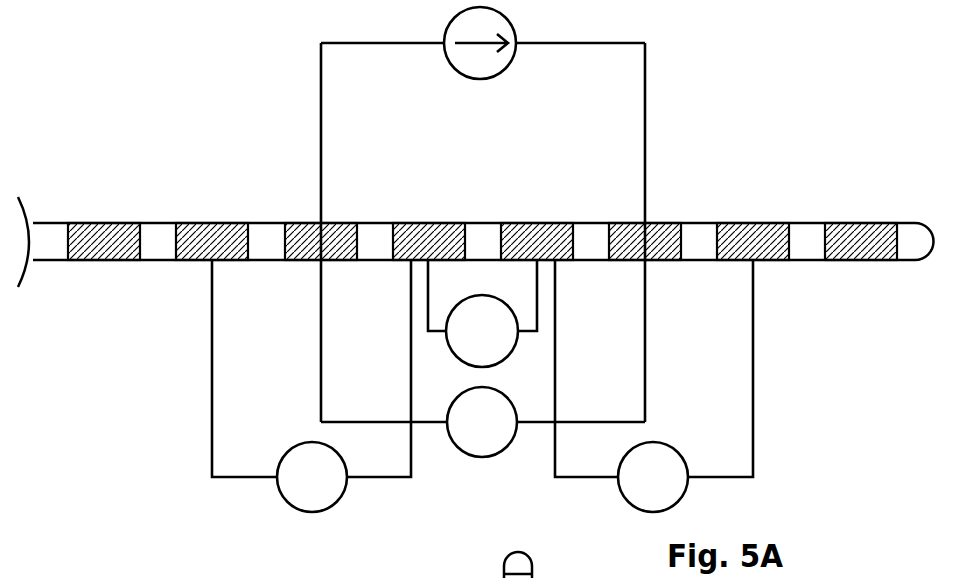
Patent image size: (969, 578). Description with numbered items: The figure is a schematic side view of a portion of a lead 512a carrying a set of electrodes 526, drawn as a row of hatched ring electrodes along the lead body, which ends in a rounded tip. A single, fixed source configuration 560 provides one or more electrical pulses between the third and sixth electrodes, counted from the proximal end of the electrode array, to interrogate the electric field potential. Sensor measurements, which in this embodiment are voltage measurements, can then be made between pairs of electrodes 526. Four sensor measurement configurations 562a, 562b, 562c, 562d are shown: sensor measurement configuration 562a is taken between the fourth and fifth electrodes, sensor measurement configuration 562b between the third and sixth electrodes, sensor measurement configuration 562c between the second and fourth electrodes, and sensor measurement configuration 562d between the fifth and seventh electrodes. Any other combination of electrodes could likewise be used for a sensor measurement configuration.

The lead 512a is at (812, 223).
The electrodes 526 is at (217, 223).
The source configuration 560 is at (468, 79).
The sensor measurement configuration 562a is at (515, 352).
The sensor measurement configuration 562b is at (460, 452).
The sensor measurement configuration 562c is at (288, 445).
The sensor measurement configuration 562d is at (672, 441).